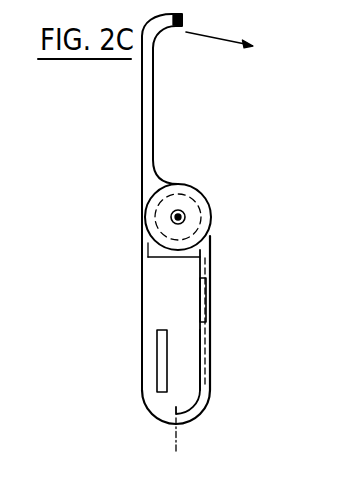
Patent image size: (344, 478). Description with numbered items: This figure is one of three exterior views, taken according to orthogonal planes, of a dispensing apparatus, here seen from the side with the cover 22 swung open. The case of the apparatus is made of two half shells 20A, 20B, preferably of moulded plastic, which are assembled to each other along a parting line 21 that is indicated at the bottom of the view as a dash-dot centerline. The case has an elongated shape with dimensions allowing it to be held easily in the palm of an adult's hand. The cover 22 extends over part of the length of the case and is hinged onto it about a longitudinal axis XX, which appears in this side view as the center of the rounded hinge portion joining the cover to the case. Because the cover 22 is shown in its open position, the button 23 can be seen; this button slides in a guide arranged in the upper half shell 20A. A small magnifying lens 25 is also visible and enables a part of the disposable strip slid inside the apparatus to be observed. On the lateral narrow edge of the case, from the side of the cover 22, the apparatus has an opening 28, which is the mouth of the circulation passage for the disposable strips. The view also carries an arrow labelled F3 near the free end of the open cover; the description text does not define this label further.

The cover 22 is at (146, 117).
The longitudinal axis XX is at (178, 217).
The button 23 is at (207, 298).
The magnifying lens 25 is at (183, 382).
The opening 28 is at (160, 352).
The upper half shell 20A is at (203, 402).
The half shell 20B is at (150, 374).
The parting line 21 is at (178, 441).
The force direction F3 is at (222, 41).